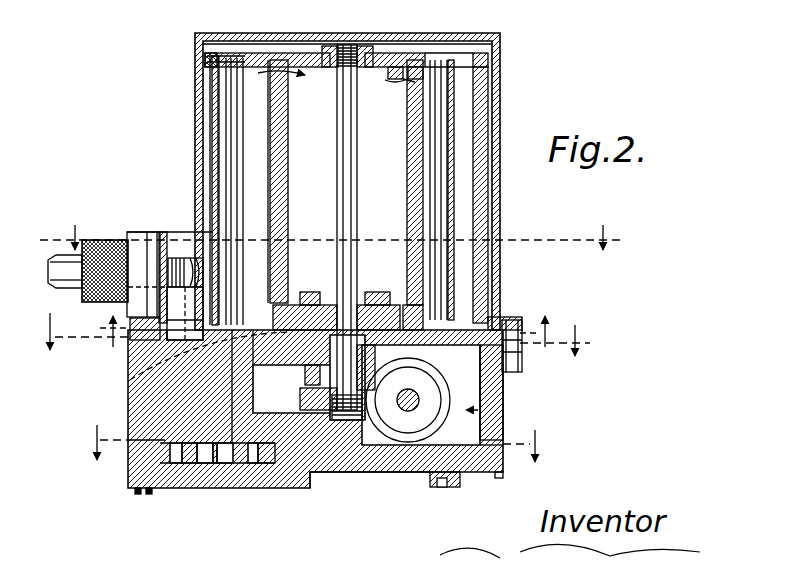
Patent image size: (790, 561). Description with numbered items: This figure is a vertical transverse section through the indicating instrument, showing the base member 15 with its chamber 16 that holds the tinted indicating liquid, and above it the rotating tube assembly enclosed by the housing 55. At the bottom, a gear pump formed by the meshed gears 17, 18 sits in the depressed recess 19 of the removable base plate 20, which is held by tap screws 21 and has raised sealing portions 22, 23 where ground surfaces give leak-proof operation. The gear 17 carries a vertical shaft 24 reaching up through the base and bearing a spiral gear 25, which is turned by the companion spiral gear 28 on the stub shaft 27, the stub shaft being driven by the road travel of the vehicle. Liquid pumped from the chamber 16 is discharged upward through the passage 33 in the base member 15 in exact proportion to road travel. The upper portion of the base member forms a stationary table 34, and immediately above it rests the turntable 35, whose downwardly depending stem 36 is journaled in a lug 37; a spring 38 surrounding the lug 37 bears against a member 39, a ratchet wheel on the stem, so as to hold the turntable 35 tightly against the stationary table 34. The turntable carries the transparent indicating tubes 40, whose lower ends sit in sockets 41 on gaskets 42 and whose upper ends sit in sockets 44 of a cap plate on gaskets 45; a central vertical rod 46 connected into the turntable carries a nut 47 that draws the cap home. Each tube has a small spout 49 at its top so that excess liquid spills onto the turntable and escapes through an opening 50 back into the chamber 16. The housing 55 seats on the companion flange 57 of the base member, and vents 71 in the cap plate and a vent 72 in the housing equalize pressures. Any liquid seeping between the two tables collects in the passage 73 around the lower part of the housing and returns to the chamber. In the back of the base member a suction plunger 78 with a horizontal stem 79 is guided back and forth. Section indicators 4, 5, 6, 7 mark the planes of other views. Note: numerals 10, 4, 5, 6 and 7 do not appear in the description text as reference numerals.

The section line 4- 4 is at (331, 238).
The section line 5- 5 is at (310, 443).
The section line 6- 6 is at (312, 334).
The section line 7- 7 is at (326, 331).
The housing base 10 is at (430, 490).
The base member 15 is at (505, 421).
The chamber 16 is at (505, 409).
The gear 17 is at (177, 490).
The gear 18 is at (263, 481).
The depressed recess 19 is at (213, 490).
The base plate 20 is at (348, 474).
The tap screws 21 is at (134, 496).
The raised sealing portion 22 is at (505, 470).
The raised sealing portion 23 is at (315, 484).
The vertical shaft 24 is at (120, 447).
The spiral gear 25 is at (190, 256).
The stub shaft 27 is at (126, 244).
The spiral gear 28 is at (195, 235).
The passage 33 is at (130, 418).
The stationary table 34 is at (200, 372).
The turntable 35 is at (433, 307).
The stem 36 is at (333, 300).
The lug 37 is at (378, 358).
The spring 38 is at (305, 378).
The member 39 is at (300, 399).
The indicating tubes 40 is at (213, 150).
The sockets 41 is at (497, 311).
The gasket 42 is at (133, 363).
The sockets 44 is at (205, 60).
The gasket 45 is at (214, 56).
The vertical rod 46 is at (352, 158).
The nut 47 is at (328, 46).
The spout 49 is at (230, 78).
The opening 50 is at (430, 283).
The housing 55 is at (495, 34).
The companion flange 57 is at (522, 360).
The vents 71 is at (305, 53).
The vent 72 is at (395, 67).
The passage 73 is at (504, 401).
The suction plunger 78 is at (473, 466).
The horizontal stem 79 is at (407, 408).